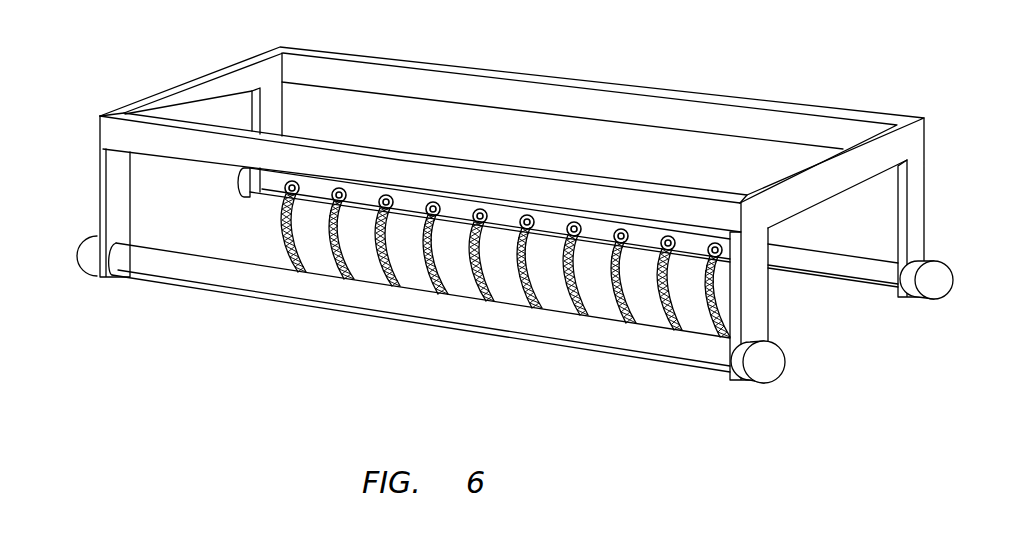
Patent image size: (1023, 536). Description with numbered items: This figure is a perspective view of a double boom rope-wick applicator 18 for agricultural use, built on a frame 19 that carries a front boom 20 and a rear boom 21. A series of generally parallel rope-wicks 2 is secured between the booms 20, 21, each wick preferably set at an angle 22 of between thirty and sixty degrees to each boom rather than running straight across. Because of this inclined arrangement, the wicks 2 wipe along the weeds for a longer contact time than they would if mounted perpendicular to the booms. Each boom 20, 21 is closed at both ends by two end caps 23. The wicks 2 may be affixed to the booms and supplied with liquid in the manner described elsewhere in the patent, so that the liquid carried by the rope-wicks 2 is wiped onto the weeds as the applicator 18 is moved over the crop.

The rope-wick 2 is at (282, 250).
The double boom rope-wick applicator 18 is at (561, 208).
The frame 19 is at (750, 100).
The front boom 20 is at (877, 270).
The rear boom 21 is at (698, 352).
The angle 22 is at (627, 258).
The end cap 23 is at (234, 186).